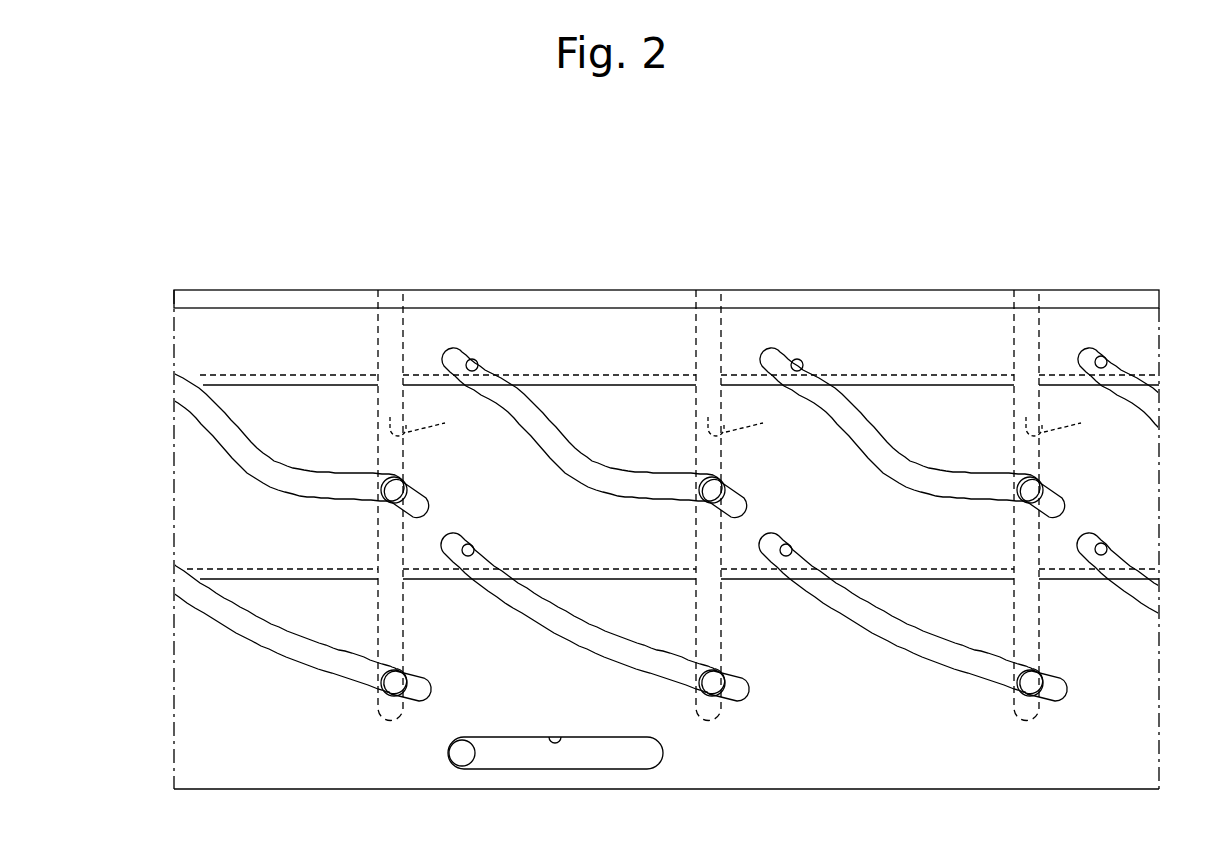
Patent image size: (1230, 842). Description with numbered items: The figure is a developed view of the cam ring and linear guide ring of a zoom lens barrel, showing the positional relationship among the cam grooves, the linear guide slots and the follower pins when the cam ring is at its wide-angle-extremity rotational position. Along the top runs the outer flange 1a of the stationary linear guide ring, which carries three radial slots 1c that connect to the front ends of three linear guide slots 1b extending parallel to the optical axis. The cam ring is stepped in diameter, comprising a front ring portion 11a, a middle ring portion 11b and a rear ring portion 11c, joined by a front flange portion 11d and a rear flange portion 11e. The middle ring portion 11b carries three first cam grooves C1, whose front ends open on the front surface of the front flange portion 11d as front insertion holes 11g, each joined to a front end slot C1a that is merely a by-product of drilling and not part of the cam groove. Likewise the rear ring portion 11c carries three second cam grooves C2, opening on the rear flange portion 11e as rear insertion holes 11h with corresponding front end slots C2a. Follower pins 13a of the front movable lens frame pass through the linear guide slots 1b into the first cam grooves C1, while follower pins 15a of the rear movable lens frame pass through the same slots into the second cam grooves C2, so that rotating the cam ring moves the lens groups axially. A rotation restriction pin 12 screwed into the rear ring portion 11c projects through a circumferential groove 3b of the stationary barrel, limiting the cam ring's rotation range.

The outer flange 1a is at (878, 298).
The linear guide slots 1b is at (756, 421).
The radial slots 1c is at (388, 290).
The front ring portion 11a is at (958, 308).
The middle ring portion 11b is at (657, 410).
The rear ring portion 11c is at (660, 605).
The front flange portion 11d is at (915, 377).
The rear flange portion 11e is at (413, 580).
The front insertion holes 11g is at (392, 380).
The rear insertion holes 11h is at (378, 562).
The rotation restriction pin 12 is at (462, 748).
The follower pins 13a is at (405, 488).
The follower pins 15a is at (410, 680).
The circumferential groove 3b is at (557, 740).
The first cam grooves C1 is at (258, 448).
The front end slots C1a is at (478, 364).
The second cam grooves C2 is at (285, 637).
The front end slots C2a is at (473, 548).